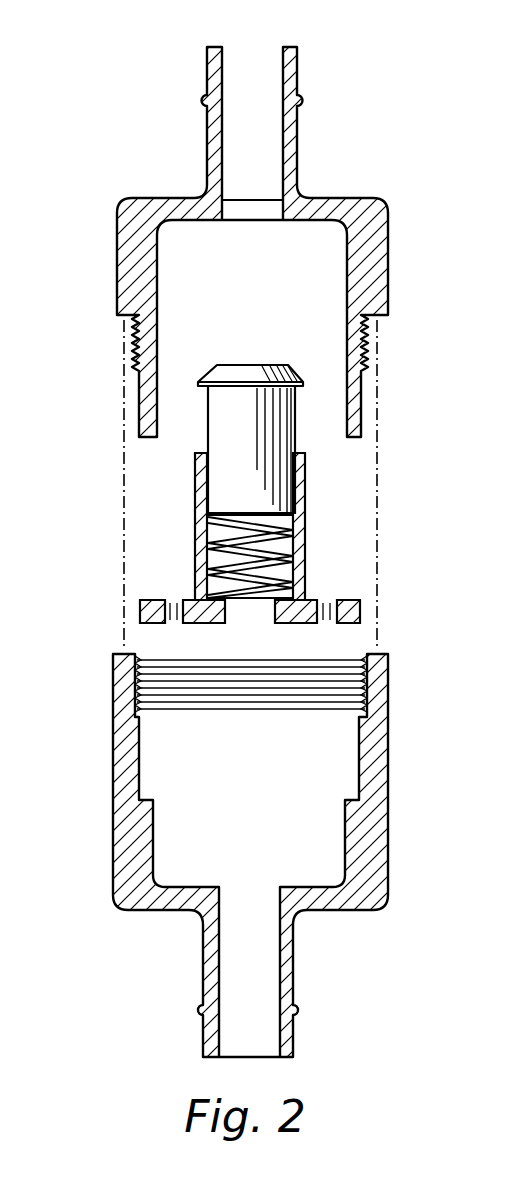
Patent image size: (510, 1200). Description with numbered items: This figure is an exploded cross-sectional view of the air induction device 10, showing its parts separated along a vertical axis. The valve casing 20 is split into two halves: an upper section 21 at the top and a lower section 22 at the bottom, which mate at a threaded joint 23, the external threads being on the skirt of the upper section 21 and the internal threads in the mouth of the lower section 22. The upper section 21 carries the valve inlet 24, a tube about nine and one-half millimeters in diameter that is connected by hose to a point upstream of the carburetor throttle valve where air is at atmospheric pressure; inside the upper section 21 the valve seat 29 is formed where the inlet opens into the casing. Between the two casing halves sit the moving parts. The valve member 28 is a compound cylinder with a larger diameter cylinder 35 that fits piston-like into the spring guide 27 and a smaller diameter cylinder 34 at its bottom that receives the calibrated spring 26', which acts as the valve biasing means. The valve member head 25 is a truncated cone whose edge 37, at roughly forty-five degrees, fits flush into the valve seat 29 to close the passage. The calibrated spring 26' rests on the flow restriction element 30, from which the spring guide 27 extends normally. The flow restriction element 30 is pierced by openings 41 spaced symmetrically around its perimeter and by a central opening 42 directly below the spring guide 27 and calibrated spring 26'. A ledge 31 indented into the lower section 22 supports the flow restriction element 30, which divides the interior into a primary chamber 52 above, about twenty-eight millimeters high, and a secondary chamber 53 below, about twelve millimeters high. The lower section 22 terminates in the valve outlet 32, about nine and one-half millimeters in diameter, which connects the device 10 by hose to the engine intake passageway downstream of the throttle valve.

The air induction device 10 is at (130, 138).
The valve casing 20 is at (412, 172).
The upper section 21 is at (112, 218).
The lower section 22 is at (115, 745).
The threaded joint 23 is at (135, 344).
The valve inlet 24 is at (232, 82).
The valve member head 25 is at (200, 370).
The calibrated spring 26' is at (182, 556).
The spring guide 27 is at (195, 498).
The valve member 28 is at (206, 418).
The valve seat 29 is at (298, 212).
The flow restriction element 30 is at (140, 612).
The ledge 31 is at (358, 796).
The valve outlet 32 is at (233, 977).
The smaller diameter cylinder 34 is at (293, 546).
The larger diameter cylinder 35 is at (305, 497).
The edge 37 is at (317, 370).
The openings 41 is at (172, 600).
The opening 42 is at (258, 618).
The primary chamber 52 is at (177, 279).
The secondary chamber 53 is at (168, 834).